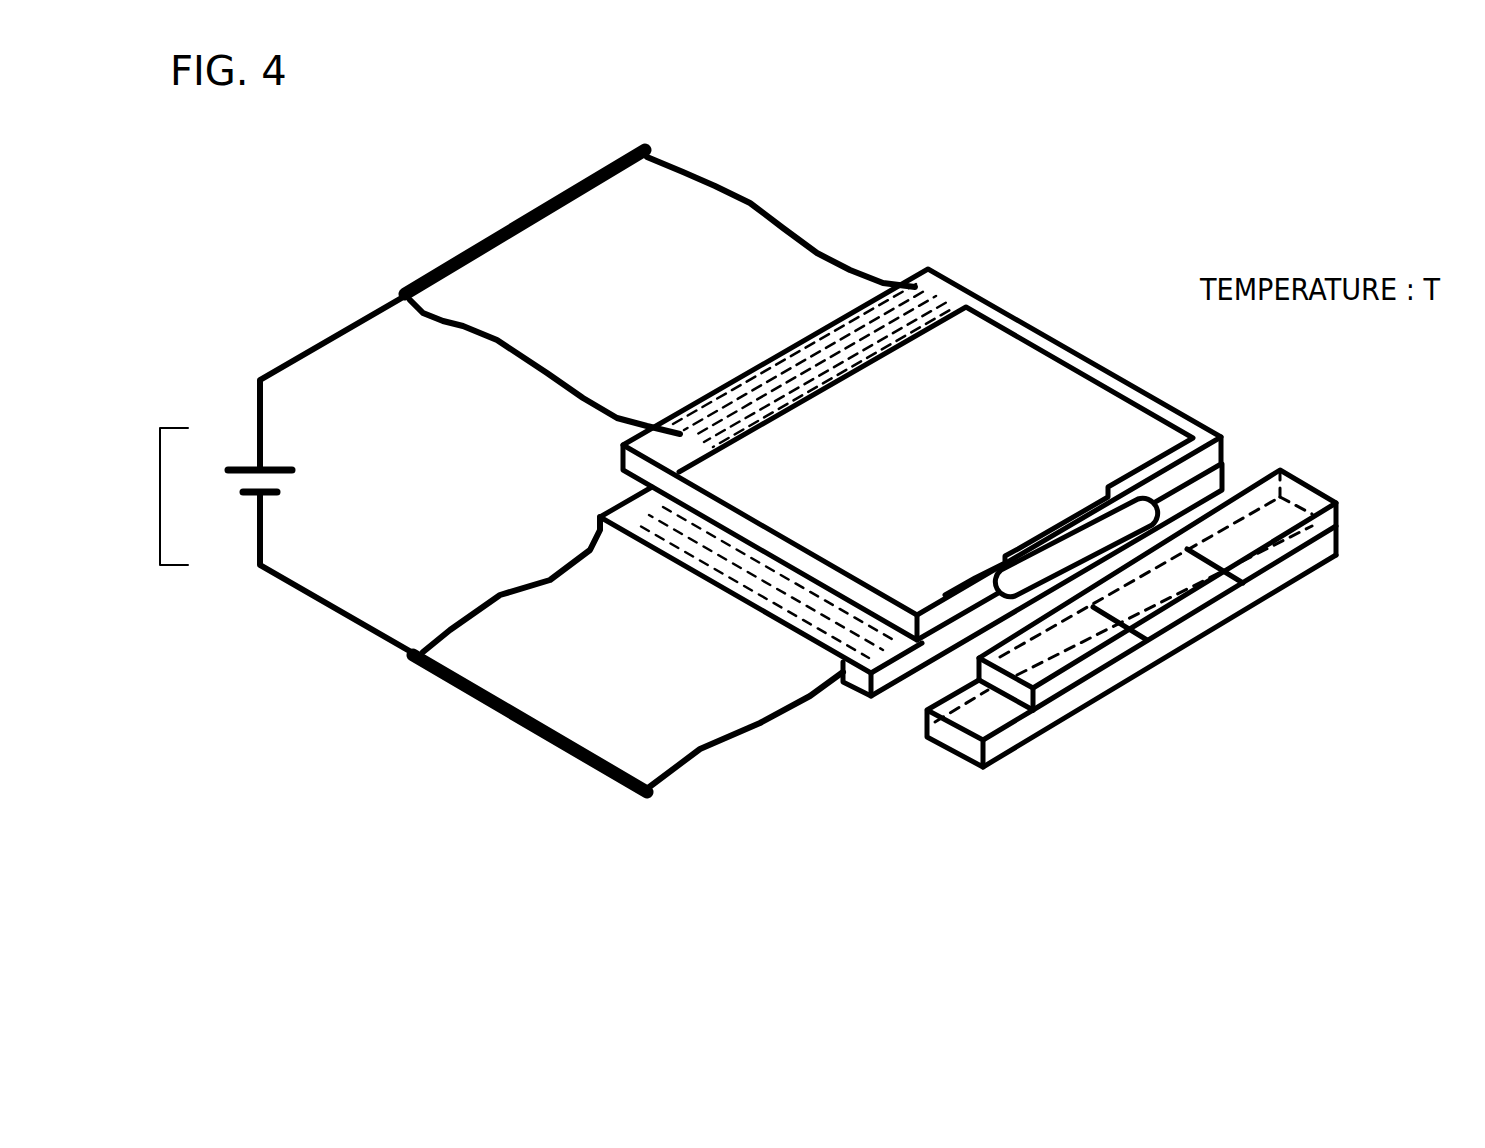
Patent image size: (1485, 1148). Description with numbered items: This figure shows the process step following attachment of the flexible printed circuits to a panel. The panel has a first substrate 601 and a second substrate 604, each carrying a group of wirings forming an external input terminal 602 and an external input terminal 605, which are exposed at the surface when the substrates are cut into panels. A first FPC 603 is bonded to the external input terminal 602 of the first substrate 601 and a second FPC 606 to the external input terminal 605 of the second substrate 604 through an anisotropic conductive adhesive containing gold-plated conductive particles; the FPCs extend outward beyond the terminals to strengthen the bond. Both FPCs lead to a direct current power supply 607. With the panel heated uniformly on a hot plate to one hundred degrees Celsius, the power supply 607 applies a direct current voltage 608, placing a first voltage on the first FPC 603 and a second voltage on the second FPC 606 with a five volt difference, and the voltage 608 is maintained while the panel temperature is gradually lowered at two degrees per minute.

The first substrate 601 is at (967, 305).
The external input terminal 602 is at (925, 310).
The first FPC 603 is at (732, 233).
The second substrate 604 is at (873, 690).
The external input terminal 605 is at (847, 637).
The second FPC 606 is at (665, 727).
The direct current power supply 607 is at (283, 492).
The direct current voltage 608 is at (186, 497).